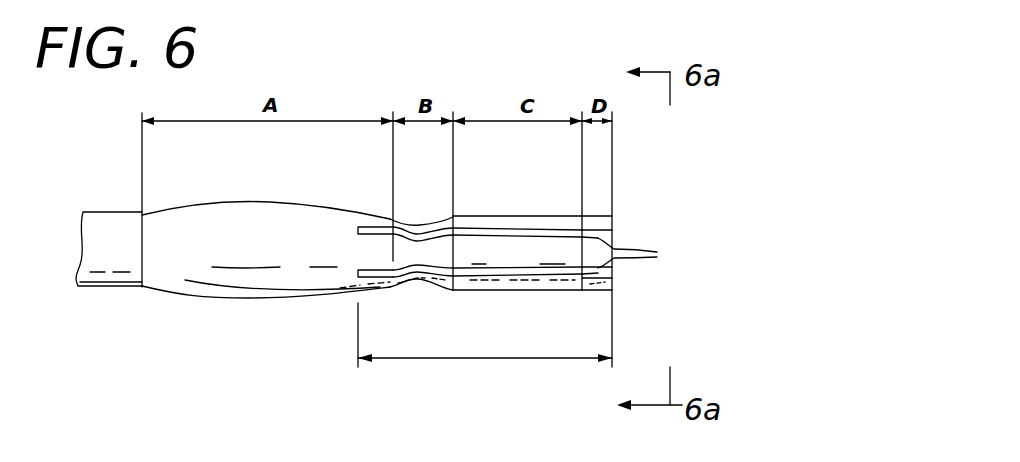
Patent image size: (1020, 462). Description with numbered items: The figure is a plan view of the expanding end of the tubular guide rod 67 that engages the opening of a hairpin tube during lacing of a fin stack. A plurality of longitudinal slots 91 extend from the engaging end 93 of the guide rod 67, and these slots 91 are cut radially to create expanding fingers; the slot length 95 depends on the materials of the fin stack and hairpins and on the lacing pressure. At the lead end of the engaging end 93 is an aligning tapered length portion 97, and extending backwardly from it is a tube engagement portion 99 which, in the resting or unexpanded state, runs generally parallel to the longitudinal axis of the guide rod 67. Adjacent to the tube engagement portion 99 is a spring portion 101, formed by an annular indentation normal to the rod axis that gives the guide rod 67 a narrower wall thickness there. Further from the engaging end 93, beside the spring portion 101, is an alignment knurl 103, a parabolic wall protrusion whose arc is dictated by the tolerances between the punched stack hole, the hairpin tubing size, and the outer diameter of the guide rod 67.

The tubular guide rod 67 is at (131, 262).
The longitudinal slots 91 is at (648, 254).
The engaging end 93 is at (707, 252).
The slot length 95 is at (490, 383).
The aligning tapered length portion 97 is at (600, 218).
The tube engagement portion 99 is at (510, 217).
The spring portion 101 is at (422, 230).
The alignment knurl 103 is at (273, 204).